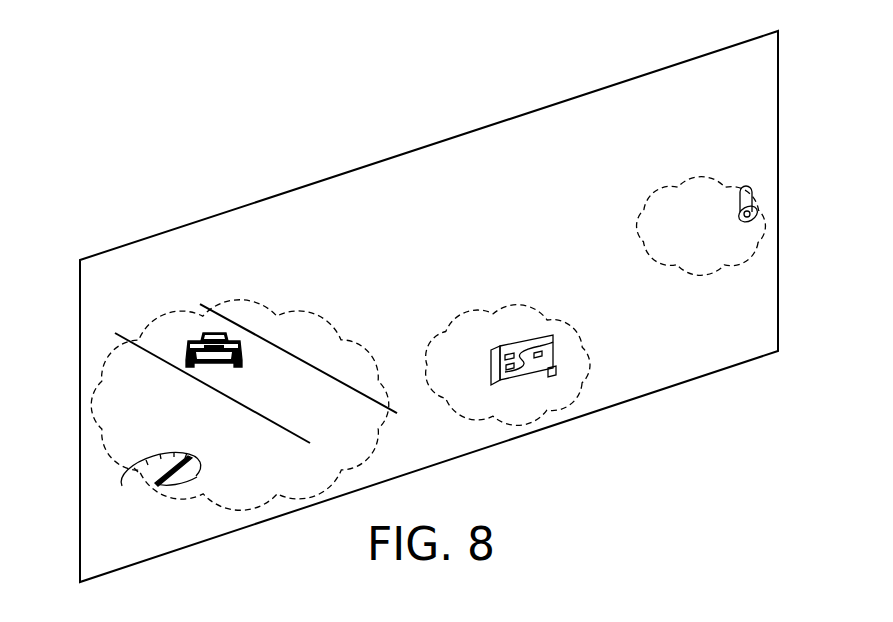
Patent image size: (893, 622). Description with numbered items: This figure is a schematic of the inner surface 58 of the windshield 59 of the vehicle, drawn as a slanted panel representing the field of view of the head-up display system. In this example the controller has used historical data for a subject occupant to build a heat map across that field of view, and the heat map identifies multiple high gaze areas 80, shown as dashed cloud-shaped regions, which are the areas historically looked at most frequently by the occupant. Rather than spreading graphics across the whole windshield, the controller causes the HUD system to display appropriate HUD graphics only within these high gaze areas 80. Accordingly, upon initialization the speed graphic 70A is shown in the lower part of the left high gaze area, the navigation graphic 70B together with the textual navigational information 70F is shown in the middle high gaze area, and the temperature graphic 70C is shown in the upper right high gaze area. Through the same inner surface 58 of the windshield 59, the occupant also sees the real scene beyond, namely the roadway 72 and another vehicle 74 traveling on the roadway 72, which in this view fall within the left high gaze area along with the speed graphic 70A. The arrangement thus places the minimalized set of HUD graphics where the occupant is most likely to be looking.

The inner surface 58 is at (443, 231).
The windshield 59 is at (255, 204).
The high gaze areas 80 is at (155, 313).
The roadway 72 is at (287, 350).
The another vehicle 74 is at (215, 332).
The speed graphic 70A is at (190, 483).
The navigation graphic 70B is at (522, 347).
The temperature graphic 70C is at (745, 222).
The textual navigation information 70F is at (475, 408).